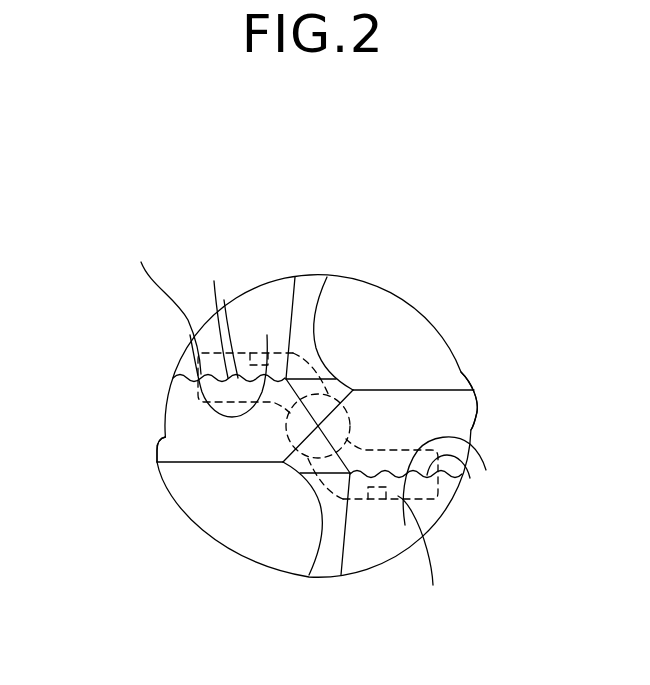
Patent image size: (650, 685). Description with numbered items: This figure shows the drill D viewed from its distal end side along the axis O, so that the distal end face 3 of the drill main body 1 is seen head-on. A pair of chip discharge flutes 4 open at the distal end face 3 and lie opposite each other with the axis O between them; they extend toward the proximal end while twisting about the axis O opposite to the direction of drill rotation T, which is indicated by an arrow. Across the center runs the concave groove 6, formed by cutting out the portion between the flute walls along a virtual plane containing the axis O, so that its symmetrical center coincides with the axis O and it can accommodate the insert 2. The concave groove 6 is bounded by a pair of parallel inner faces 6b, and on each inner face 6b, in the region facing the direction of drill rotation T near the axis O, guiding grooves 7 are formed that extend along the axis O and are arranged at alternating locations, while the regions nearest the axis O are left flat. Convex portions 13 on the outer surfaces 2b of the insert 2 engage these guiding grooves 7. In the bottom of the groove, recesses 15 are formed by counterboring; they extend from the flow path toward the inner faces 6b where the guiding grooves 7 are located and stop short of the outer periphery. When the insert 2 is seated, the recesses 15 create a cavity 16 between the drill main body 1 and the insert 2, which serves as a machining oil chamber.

The drill main body 1 is at (367, 285).
The insert 2 is at (190, 418).
The outer surfaces of the insert 2b is at (468, 552).
The distal end face 3 is at (367, 532).
The chip discharge flutes 4 is at (403, 318).
The concave groove 6 is at (441, 481).
The inner faces of the concave groove 6b is at (172, 378).
The guiding grooves 7 is at (193, 372).
The convex portions 13 is at (285, 421).
The recesses 15 is at (276, 352).
The cavity 16 is at (388, 442).
The axis O is at (346, 381).
The drill D is at (202, 228).
The direction of drill rotation T is at (545, 395).